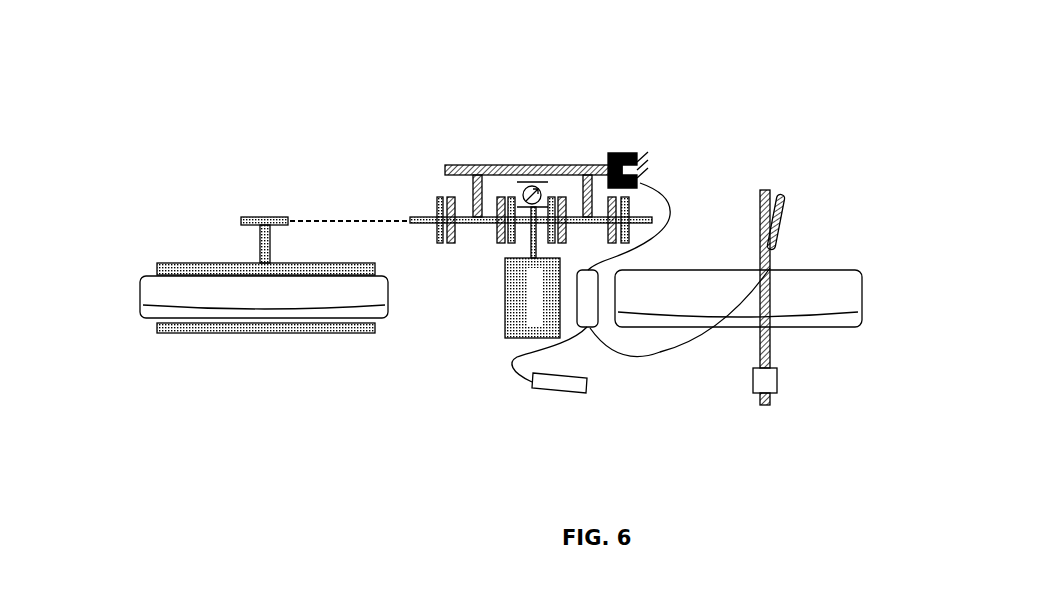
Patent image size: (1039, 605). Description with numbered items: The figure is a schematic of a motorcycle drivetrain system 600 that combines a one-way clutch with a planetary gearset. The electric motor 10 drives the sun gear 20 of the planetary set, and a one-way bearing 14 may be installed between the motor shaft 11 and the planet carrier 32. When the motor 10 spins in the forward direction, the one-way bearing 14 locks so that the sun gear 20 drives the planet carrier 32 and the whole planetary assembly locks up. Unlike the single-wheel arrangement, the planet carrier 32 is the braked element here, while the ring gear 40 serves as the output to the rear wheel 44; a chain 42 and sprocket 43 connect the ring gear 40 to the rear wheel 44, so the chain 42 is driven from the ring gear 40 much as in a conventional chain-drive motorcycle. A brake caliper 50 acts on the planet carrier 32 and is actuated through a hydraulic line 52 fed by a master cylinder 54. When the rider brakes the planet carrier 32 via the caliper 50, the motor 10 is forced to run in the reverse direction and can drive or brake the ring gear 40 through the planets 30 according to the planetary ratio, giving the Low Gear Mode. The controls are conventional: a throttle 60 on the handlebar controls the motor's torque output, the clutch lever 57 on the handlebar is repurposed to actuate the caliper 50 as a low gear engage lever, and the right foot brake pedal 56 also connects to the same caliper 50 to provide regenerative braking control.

The system 600 is at (899, 113).
The motor 10 is at (500, 308).
The motor shaft 11 is at (516, 241).
The one-way bearing 14 is at (552, 185).
The sun gear 20 is at (526, 252).
The planet gears 30 is at (472, 237).
The planet carrier 32 is at (476, 160).
The ring gear 40 is at (421, 196).
The chain 42 is at (360, 208).
The sprocket 43 is at (262, 208).
The rear wheel 44 is at (128, 295).
The brake caliper 50 is at (617, 144).
The hydraulic line 52 is at (681, 188).
The master cylinder 54 is at (606, 328).
The brake pedal 56 is at (549, 405).
The clutch lever 57 is at (794, 222).
The throttle 60 is at (783, 376).